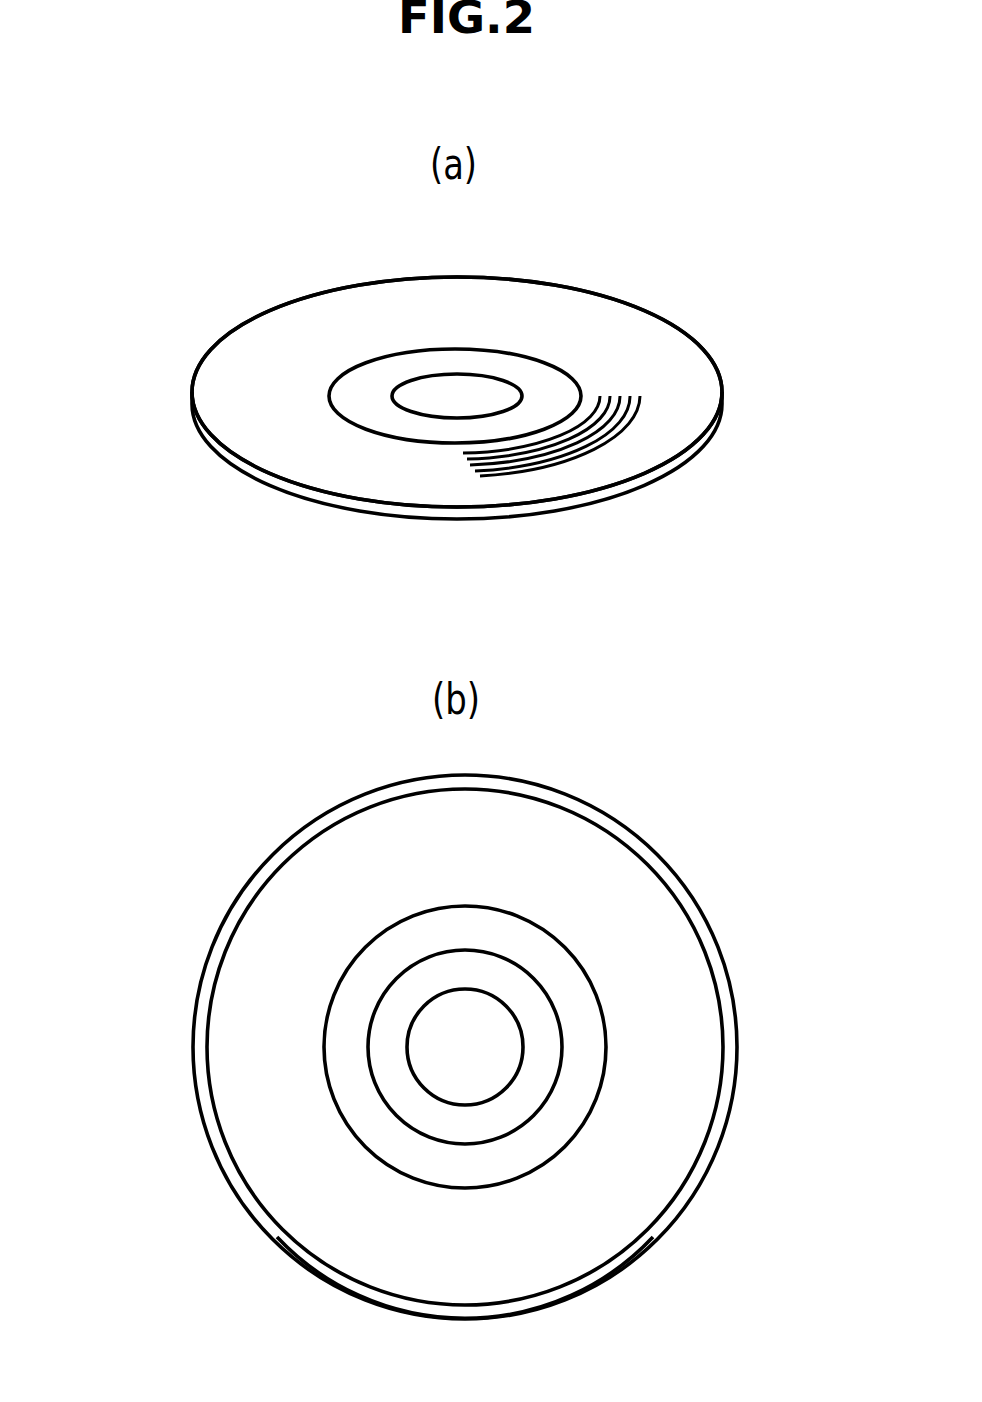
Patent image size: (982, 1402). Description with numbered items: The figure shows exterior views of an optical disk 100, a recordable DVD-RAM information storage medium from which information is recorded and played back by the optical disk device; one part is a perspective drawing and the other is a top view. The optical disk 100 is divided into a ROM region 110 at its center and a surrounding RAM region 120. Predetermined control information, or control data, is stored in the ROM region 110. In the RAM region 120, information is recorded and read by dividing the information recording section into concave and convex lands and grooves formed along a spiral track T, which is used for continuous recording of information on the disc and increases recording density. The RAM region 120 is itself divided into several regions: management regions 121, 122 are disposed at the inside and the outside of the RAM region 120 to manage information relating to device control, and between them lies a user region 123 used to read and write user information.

The optical disk 100 is at (307, 502).
The ROM region 110 is at (420, 363).
The RAM region 120 is at (607, 327).
The management region 121 is at (463, 1146).
The management region 122 is at (620, 1263).
The user region 123 is at (463, 1190).
The spiral track T is at (463, 453).